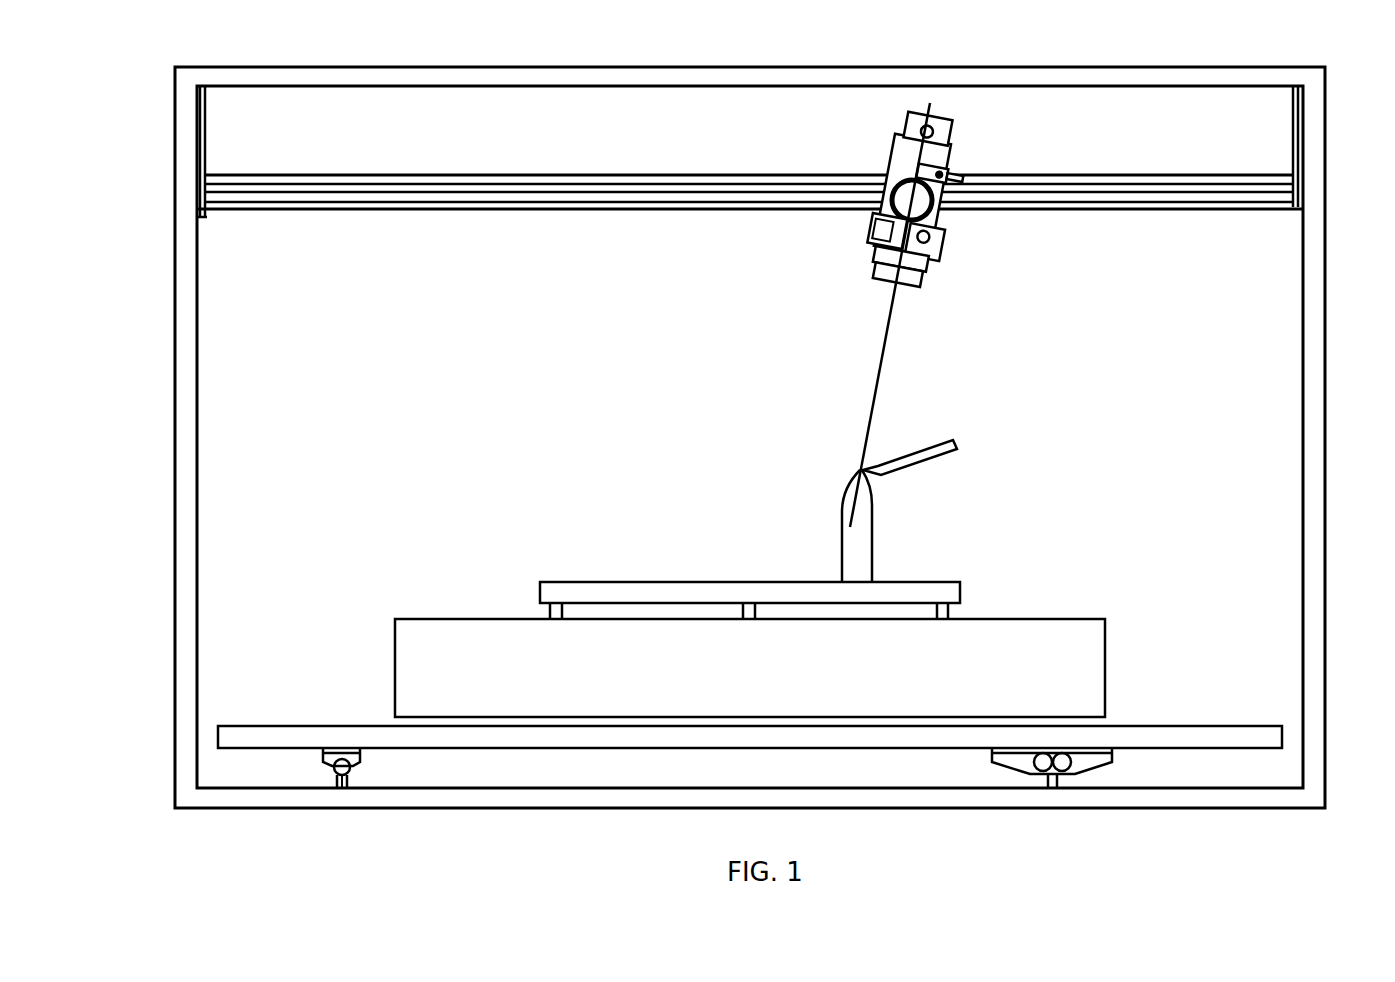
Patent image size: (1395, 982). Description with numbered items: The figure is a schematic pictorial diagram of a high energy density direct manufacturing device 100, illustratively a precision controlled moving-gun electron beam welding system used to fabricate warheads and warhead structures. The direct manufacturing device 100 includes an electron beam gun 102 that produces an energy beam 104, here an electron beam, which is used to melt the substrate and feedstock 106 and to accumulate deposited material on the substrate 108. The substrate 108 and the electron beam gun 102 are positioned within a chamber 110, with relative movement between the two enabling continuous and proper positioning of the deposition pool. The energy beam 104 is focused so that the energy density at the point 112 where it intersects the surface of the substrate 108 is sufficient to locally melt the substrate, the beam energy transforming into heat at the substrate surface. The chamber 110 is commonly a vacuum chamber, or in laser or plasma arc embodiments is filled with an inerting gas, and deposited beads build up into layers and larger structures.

The high energy density direct manufacturing device 100 is at (124, 107).
The electron beam gun 102 is at (889, 163).
The energy beam 104 is at (887, 358).
The feedstock 106 is at (866, 473).
The substrate 108 is at (842, 512).
The chamber 110 is at (1326, 247).
The point 112 is at (866, 478).